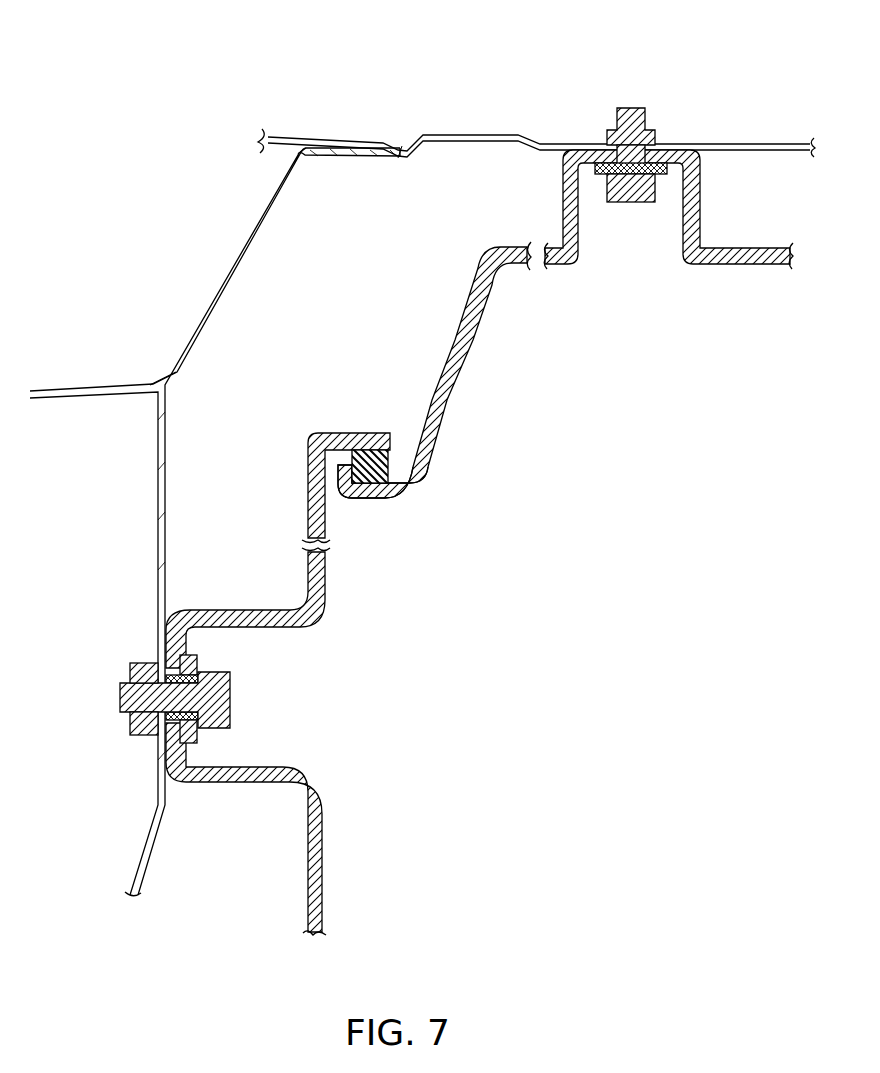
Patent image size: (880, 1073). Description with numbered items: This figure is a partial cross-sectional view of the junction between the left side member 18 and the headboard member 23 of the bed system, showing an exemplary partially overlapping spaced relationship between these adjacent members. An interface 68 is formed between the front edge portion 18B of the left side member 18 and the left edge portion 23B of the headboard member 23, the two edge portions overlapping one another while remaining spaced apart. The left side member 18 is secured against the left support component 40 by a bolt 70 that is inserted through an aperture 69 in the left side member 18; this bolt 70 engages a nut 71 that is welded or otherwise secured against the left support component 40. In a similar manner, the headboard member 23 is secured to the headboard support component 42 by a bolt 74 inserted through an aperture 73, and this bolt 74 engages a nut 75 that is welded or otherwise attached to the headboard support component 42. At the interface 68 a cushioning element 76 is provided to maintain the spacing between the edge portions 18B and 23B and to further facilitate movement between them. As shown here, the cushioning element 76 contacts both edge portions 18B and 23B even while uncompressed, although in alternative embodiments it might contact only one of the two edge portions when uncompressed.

The left side member 18 is at (395, 816).
The front edge portion 18B is at (294, 487).
The headboard member 23 is at (532, 320).
The left edge portion 23B is at (427, 494).
The left support component 40 is at (146, 505).
The headboard support component 42 is at (481, 116).
The interface 68 is at (337, 508).
The aperture 69 is at (159, 668).
The bolt 70 is at (230, 698).
The nut 71 is at (138, 738).
The aperture 73 is at (662, 146).
The bolt 74 is at (633, 203).
The nut 75 is at (609, 134).
The cushioning element 76 is at (391, 453).